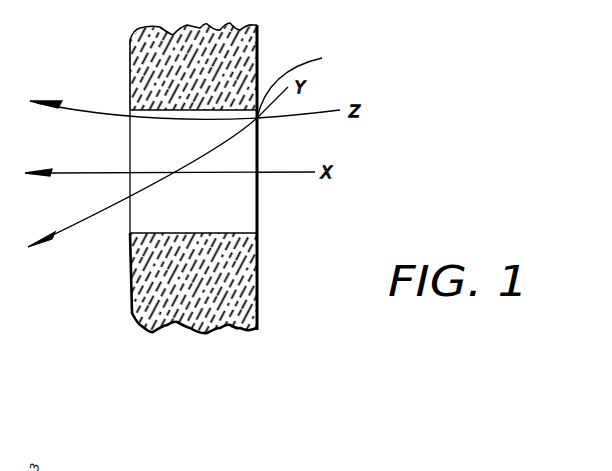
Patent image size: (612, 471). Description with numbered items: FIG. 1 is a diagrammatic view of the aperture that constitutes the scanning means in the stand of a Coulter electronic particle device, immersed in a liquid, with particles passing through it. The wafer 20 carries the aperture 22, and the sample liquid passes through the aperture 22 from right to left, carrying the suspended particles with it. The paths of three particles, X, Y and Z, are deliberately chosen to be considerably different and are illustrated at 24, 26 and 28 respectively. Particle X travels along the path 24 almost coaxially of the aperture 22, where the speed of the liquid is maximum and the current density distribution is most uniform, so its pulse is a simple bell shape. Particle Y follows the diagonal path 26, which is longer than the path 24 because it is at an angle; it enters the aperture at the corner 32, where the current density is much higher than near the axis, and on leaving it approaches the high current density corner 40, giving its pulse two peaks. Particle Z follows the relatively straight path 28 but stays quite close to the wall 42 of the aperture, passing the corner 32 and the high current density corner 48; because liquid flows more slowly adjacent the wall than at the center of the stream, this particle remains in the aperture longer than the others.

The wafer 20 is at (257, 67).
The aperture 22 is at (240, 207).
The path of particle X 24 is at (105, 172).
The path of particle Y 26 is at (96, 224).
The path of particle Z 28 is at (97, 115).
The corner 32 is at (304, 84).
The corner 40 is at (130, 233).
The wall 42 is at (203, 110).
The corner 48 is at (130, 110).